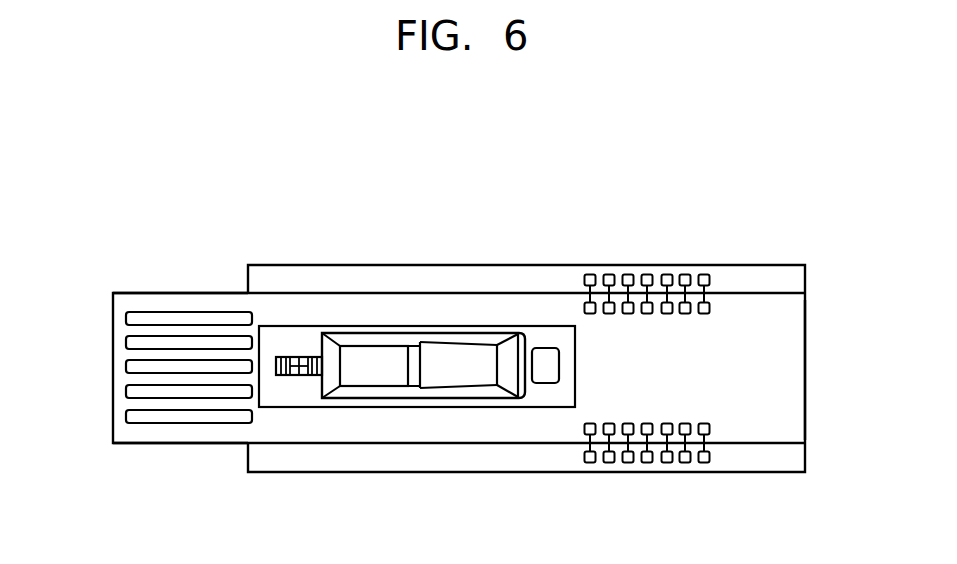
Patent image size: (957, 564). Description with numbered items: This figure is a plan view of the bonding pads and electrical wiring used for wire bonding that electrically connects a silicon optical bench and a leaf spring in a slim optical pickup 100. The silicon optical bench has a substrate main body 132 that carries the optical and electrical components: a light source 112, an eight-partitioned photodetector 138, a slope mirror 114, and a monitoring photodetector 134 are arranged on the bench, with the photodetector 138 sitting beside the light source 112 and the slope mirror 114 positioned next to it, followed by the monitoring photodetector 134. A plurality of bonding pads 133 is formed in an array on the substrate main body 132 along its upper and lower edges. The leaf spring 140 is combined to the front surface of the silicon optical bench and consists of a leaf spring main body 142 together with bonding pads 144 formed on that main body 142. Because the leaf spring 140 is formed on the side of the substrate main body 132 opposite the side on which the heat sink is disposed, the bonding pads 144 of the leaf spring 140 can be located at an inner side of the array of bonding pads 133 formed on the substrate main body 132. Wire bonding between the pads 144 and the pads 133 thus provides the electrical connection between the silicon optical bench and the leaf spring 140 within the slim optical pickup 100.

The slim optical pickup 100 is at (240, 167).
The light source 112 is at (370, 357).
The slope mirror 114 is at (508, 358).
The substrate main body 132 is at (778, 267).
The bonding pads 133 is at (628, 465).
The monitoring photodetector 134 is at (558, 356).
The eight-partitioned photodetector 138 is at (299, 347).
The leaf spring 140 is at (190, 287).
The leaf spring main body 142 is at (790, 352).
The bonding pads 144 is at (587, 433).